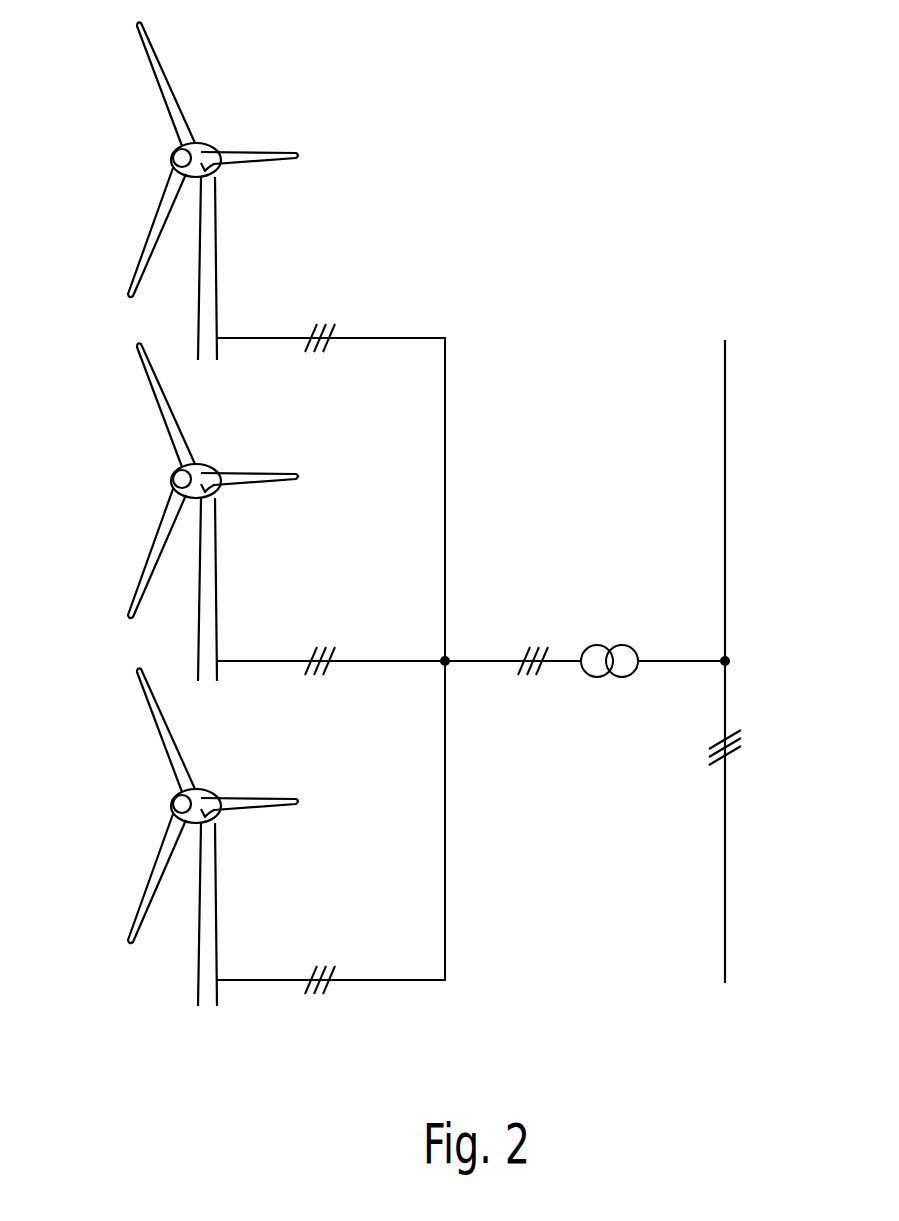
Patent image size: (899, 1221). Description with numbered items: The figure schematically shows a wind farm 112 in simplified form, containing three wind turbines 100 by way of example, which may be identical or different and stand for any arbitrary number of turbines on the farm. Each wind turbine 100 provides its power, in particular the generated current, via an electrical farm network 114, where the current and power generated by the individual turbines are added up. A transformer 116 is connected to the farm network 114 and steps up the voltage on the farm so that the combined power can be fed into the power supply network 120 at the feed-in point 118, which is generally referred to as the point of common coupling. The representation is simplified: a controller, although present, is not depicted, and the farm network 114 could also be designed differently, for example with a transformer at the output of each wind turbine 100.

The wind turbine 100 is at (217, 247).
The wind farm 112 is at (573, 178).
The electrical farm network 114 is at (475, 659).
The transformer 116 is at (622, 625).
The feed-in point 118 is at (733, 645).
The power supply network 120 is at (723, 387).